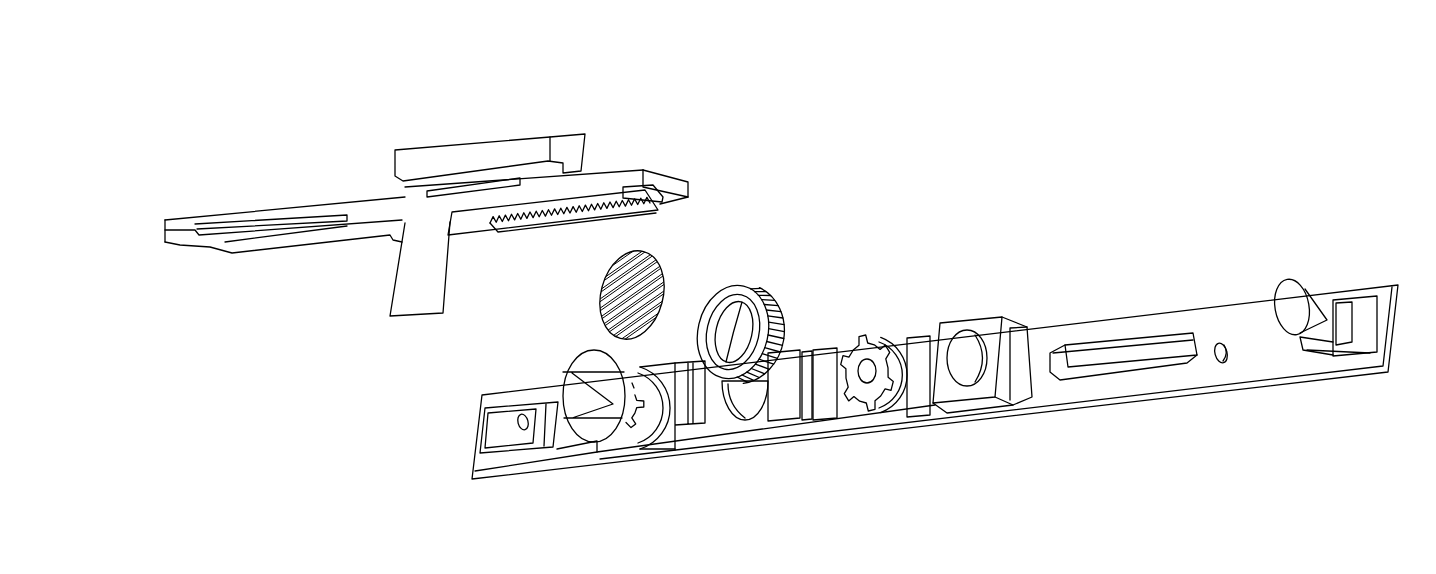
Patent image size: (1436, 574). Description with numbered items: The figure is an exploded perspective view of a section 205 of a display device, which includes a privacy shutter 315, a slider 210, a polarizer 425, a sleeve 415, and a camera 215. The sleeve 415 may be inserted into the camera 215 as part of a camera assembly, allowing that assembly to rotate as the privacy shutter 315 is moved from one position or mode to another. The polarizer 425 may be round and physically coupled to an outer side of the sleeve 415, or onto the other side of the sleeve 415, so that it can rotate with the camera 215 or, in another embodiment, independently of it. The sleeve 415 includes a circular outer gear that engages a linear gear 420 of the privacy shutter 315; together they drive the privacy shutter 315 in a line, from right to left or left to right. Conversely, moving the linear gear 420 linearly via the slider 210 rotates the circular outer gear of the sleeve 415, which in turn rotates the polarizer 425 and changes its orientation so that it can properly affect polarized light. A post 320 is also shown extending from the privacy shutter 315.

The section 205 is at (250, 56).
The slider 210 is at (517, 136).
The camera 215 is at (877, 336).
The privacy shutter 315 is at (678, 178).
The post 320 is at (425, 317).
The sleeve 415 is at (778, 290).
The linear gear 420 is at (538, 226).
The polarizer 425 is at (670, 258).